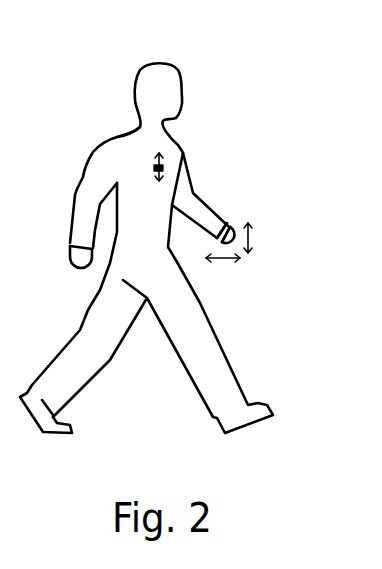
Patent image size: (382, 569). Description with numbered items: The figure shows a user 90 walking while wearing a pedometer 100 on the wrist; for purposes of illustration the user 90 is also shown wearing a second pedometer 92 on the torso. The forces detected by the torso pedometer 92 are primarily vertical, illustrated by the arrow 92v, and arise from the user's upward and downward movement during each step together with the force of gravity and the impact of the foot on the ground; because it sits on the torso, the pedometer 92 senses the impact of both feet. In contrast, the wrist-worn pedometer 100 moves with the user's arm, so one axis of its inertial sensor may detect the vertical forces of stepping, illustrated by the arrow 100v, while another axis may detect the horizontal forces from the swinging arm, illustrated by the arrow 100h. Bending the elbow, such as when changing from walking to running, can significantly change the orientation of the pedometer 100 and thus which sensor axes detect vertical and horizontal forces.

The user 90 is at (137, 72).
The pedometer 92 is at (163, 167).
The arrow 92v is at (157, 155).
The pedometer 100 is at (228, 225).
The arrow 100v is at (257, 236).
The arrow 100h is at (222, 262).